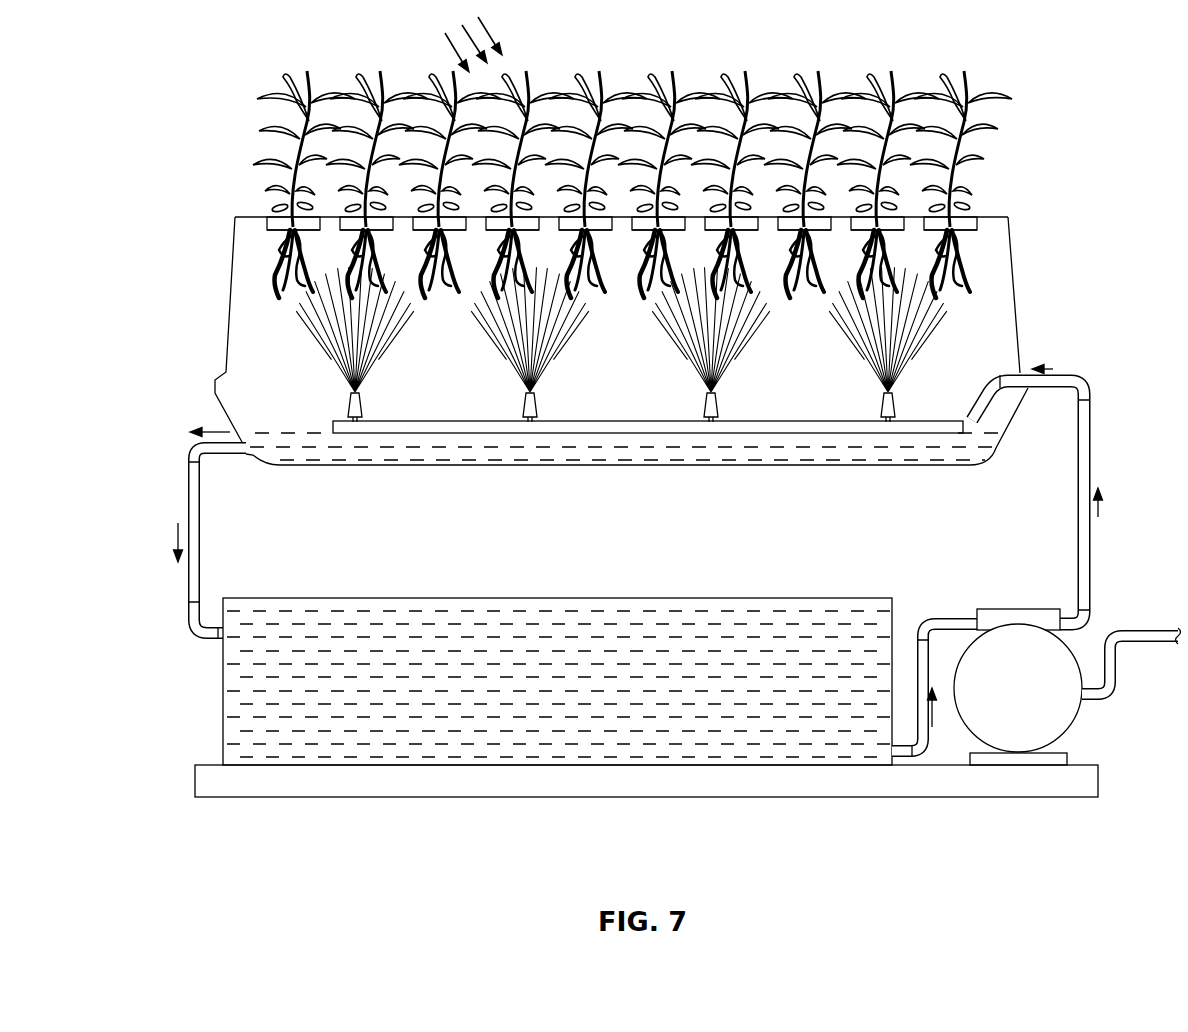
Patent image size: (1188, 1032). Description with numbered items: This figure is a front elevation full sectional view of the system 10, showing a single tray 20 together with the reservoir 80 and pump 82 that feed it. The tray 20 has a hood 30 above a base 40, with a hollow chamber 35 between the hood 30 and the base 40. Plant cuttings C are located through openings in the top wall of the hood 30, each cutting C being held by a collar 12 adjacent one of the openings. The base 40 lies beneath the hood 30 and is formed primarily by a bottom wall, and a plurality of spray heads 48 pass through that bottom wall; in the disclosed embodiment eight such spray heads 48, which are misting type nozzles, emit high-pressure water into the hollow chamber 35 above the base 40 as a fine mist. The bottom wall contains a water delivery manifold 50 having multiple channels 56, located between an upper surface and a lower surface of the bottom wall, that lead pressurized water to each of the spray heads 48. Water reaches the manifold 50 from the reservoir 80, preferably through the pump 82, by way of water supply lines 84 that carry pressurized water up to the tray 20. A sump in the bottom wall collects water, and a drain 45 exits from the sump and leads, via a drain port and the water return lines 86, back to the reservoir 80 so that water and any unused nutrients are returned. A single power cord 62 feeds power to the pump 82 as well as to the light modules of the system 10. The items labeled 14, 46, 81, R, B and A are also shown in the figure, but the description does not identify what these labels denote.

The system 10 is at (1075, 108).
The tray 20 is at (220, 180).
The collar 12 is at (967, 212).
The openings in support plate 14 is at (977, 225).
The hood 30 is at (1012, 216).
The hollow chamber 35 is at (606, 399).
The base 40 is at (990, 462).
The drain 45 is at (250, 440).
The drain connection 46 is at (228, 453).
The spray head 48 is at (365, 403).
The water delivery manifold 50 is at (1025, 348).
The channels 56 is at (392, 437).
The power cord 62 is at (1108, 676).
The reservoir 80 is at (472, 598).
The base 81 is at (690, 797).
The pump 82 is at (1033, 702).
The water supply lines 84 is at (1090, 592).
The water return lines 86 is at (190, 506).
The roots R is at (278, 296).
The plant cuttings C is at (363, 70).
The light B is at (458, 52).
The aerosol spray A is at (690, 357).